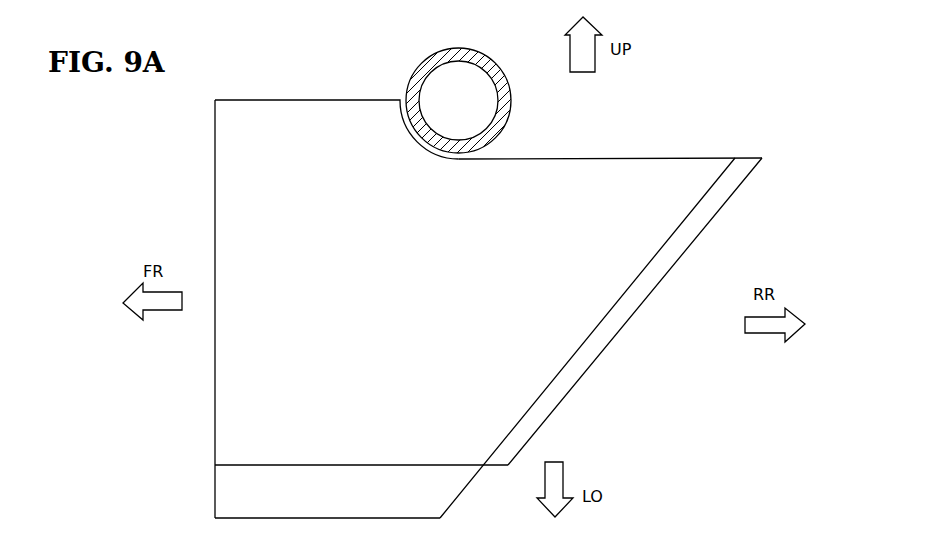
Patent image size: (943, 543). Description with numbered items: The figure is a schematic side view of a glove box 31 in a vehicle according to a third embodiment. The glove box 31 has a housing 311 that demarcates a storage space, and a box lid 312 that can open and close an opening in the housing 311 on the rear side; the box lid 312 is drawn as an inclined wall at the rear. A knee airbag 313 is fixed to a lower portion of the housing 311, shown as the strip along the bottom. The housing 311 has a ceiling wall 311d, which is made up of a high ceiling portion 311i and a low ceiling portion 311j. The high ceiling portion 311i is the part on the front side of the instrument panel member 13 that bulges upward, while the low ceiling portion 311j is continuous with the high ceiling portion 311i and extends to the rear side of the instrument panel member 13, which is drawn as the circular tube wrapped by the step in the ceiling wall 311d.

The instrument panel member 13 is at (488, 62).
The glove box 31 is at (466, 276).
The housing 311 is at (446, 276).
The ceiling wall 311d is at (282, 98).
The high ceiling portion 311i is at (357, 98).
The low ceiling portion 311j is at (572, 156).
The box lid 312 is at (733, 203).
The knee airbag 313 is at (215, 488).